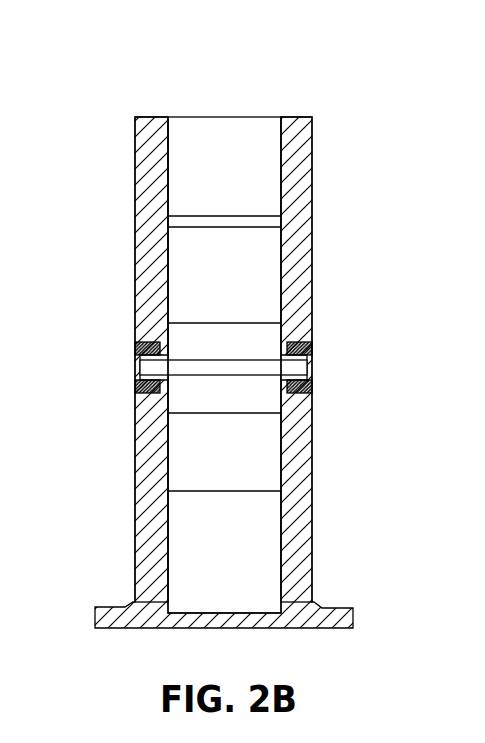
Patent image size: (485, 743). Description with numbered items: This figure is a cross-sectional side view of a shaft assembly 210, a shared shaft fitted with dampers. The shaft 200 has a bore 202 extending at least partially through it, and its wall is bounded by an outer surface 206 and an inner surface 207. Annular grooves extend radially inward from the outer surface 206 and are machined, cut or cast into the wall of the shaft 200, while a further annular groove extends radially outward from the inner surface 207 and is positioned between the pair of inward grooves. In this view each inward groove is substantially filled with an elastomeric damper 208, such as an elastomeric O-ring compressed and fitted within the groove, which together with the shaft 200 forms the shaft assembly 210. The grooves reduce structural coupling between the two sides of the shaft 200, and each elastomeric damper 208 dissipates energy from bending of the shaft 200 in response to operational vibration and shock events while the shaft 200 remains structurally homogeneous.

The shaft assembly 210 is at (220, 329).
The shaft 200 is at (221, 355).
The bore 202 is at (227, 130).
The outer surface 206 is at (135, 240).
The inner surface 207 is at (281, 458).
The elastomeric damper 208 is at (137, 347).